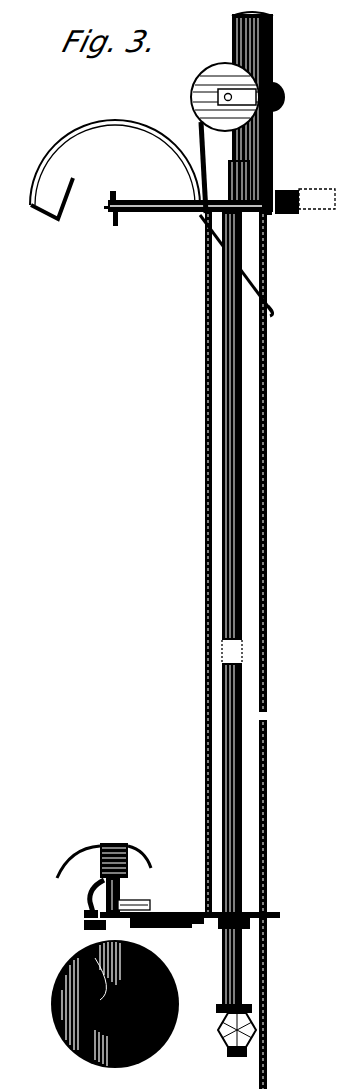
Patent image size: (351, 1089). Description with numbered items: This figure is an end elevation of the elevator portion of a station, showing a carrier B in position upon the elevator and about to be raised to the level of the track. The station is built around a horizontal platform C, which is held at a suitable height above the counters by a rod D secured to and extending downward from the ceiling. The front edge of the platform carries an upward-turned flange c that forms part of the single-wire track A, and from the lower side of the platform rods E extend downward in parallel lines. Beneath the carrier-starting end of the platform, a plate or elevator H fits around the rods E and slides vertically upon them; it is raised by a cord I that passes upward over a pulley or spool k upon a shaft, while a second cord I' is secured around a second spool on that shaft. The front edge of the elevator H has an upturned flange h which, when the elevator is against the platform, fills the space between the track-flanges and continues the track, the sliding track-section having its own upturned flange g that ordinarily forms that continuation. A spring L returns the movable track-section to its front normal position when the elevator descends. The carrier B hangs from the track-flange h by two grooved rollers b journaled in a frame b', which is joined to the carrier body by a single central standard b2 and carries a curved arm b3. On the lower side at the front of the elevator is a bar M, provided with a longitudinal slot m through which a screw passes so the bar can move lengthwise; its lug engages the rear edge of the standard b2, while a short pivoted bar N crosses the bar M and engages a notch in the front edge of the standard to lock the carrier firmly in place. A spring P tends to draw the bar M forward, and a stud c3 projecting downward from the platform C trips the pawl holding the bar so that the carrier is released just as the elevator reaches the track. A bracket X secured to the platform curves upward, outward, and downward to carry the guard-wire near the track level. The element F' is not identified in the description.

The rod D is at (246, 108).
The spool k is at (192, 96).
The bracket X is at (115, 169).
The platform C is at (176, 212).
The single-wire track A is at (113, 190).
The upward-turned flange c is at (104, 208).
The stud c3 is at (116, 226).
The spring L is at (305, 201).
The cord I is at (205, 518).
The second cord I' is at (269, 650).
The upturned flange g is at (206, 244).
The rods E is at (236, 610).
The nut F' is at (227, 1030).
The elevator plate H is at (190, 908).
The spring P is at (161, 931).
The short bar N is at (188, 931).
The grooved rollers b is at (122, 870).
The frame b' is at (74, 862).
The arm b3 is at (143, 856).
The central standard b2 is at (86, 898).
The upturned flange h is at (126, 904).
The longitudinal slot m is at (84, 914).
The bar M is at (84, 928).
The carrier B is at (104, 1004).